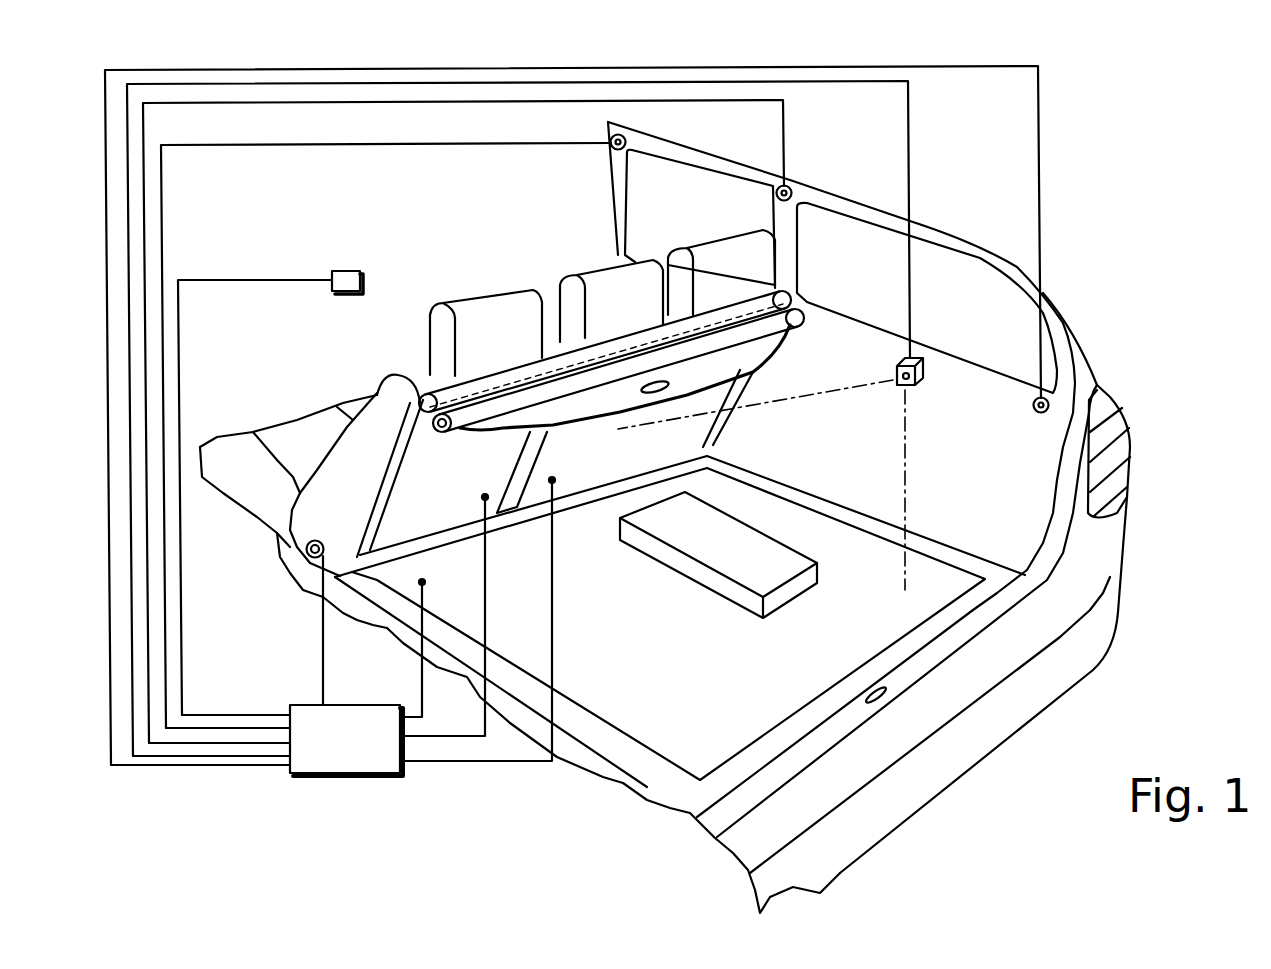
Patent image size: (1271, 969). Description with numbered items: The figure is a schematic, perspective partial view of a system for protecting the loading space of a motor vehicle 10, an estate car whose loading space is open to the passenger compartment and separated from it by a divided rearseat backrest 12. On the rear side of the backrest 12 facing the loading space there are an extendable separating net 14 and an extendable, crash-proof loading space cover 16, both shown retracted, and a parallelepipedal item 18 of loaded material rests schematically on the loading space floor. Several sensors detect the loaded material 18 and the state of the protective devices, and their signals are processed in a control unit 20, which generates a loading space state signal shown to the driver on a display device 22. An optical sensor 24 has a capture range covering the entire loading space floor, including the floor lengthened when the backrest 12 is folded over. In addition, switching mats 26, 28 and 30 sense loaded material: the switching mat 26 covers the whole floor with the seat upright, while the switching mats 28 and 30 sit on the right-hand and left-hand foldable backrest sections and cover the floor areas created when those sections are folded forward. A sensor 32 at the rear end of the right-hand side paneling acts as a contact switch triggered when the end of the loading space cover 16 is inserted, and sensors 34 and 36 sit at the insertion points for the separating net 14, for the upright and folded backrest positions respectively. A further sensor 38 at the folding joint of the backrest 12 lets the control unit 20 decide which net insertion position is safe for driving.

The motor vehicle 10 is at (1067, 340).
The rearseat backrest 12 is at (549, 345).
The separating net 14 is at (363, 402).
The loading space cover 16 is at (437, 430).
The item of loaded material 18 is at (718, 555).
The control unit 20 is at (573, 421).
The display device 22 is at (345, 277).
The optical sensor 24 is at (927, 382).
The switching mat 26 is at (683, 733).
The switching mat 28 is at (695, 432).
The switching mat 30 is at (393, 523).
The sensor 32 is at (1040, 412).
The sensor 34 is at (793, 188).
The sensor 36 is at (612, 148).
The sensor 38 is at (307, 556).